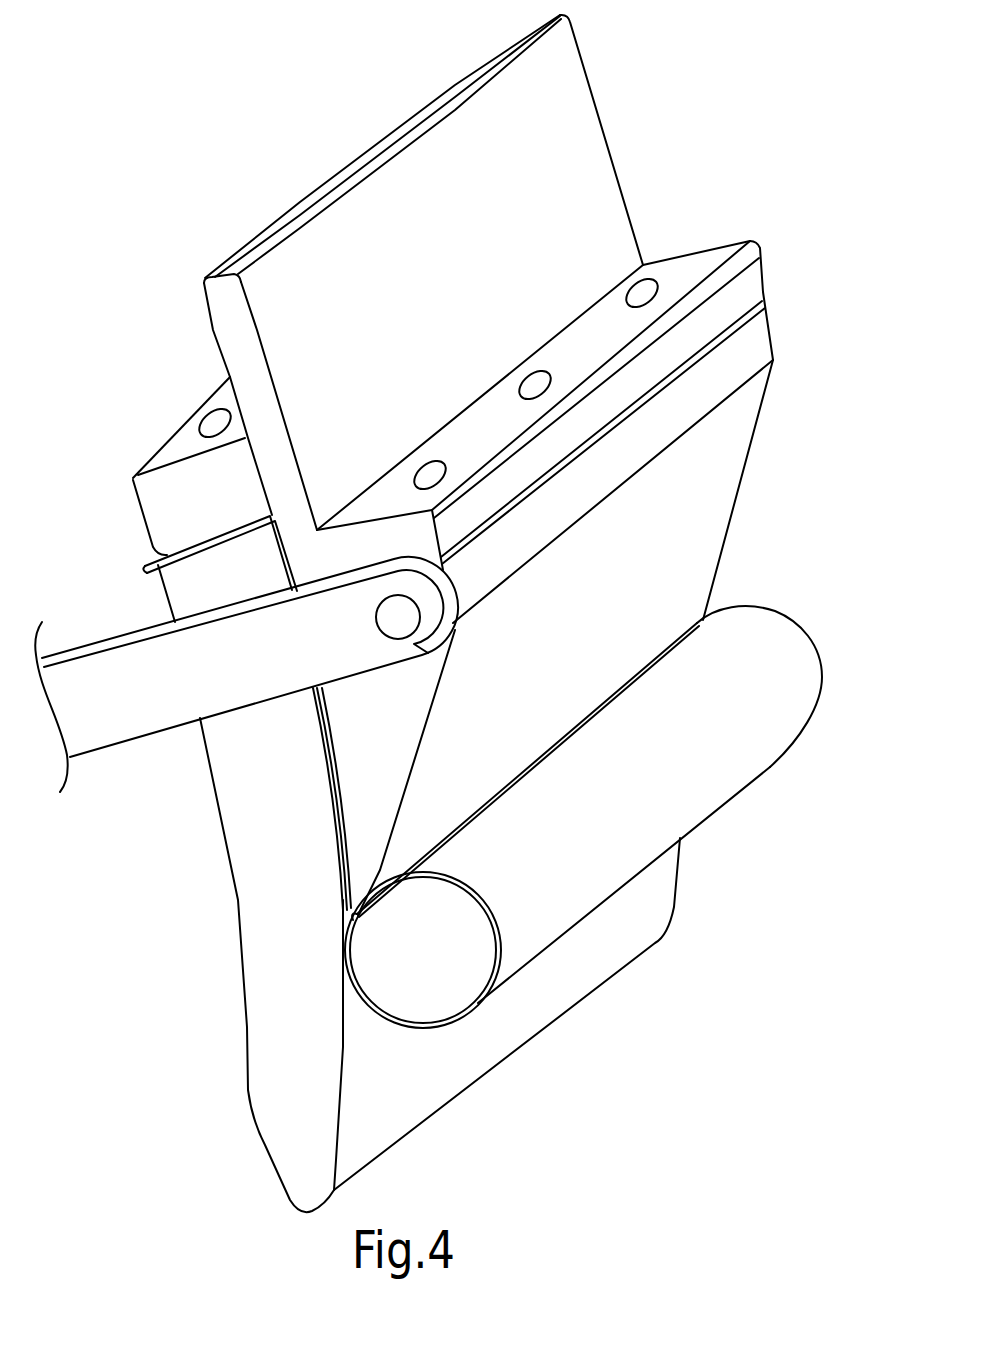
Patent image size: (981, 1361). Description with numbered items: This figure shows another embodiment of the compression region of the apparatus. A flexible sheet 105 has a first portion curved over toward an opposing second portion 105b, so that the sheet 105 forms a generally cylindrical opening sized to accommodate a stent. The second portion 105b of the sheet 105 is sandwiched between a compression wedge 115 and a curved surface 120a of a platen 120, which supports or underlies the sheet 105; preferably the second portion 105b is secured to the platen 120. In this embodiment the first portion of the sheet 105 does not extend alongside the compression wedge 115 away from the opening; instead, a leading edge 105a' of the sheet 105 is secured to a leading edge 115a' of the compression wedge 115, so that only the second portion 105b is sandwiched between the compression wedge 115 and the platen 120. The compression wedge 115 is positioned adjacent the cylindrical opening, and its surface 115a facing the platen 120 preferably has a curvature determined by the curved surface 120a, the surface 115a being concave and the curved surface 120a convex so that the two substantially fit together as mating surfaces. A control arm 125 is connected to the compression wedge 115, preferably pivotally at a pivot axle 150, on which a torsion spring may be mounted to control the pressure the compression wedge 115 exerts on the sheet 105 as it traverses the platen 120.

The flexible sheet 105 is at (458, 1022).
The leading edge of the sheet 105a' is at (452, 950).
The second portion of the sheet 105b is at (325, 767).
The compression wedge 115 is at (387, 742).
The surface of the compression wedge 115a is at (322, 713).
The leading edge of the compression wedge 115a' is at (525, 771).
The platen 120 is at (247, 1025).
The curved surface of the platen 120a is at (343, 1047).
The control arm 125 is at (120, 637).
The pivot axle 150 is at (403, 620).